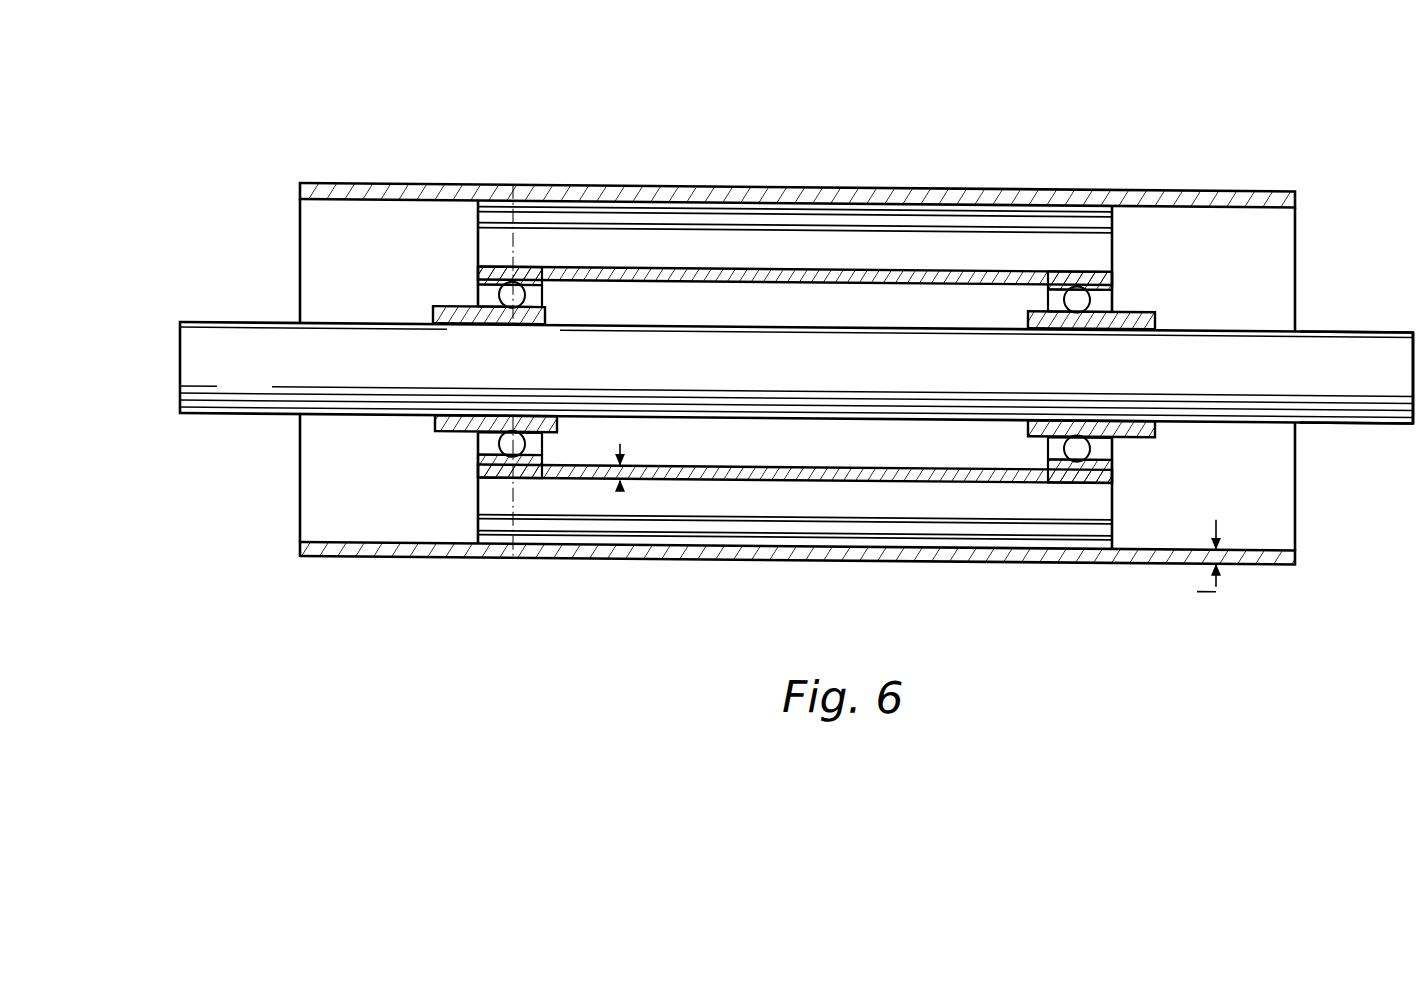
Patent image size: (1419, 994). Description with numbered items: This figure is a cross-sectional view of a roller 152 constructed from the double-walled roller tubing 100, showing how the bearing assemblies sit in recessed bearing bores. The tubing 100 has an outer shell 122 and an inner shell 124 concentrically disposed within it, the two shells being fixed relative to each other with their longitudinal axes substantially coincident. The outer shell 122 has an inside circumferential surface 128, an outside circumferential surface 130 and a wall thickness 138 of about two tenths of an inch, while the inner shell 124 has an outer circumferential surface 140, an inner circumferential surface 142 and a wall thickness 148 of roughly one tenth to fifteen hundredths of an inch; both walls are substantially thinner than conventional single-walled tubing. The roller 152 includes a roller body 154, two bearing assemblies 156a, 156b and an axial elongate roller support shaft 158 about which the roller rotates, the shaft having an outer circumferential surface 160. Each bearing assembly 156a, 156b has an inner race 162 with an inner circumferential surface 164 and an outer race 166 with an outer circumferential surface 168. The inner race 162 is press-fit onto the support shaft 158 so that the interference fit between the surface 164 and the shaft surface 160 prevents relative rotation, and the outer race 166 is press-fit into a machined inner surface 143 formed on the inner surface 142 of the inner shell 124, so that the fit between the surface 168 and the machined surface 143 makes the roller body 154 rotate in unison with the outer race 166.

The roller tubing 100 is at (799, 356).
The outer shell 122 is at (1216, 181).
The inner shell 124 is at (742, 260).
The inside circumferential surface 128 is at (408, 557).
The outside circumferential surface 130 is at (322, 562).
The wall thickness 138 is at (1170, 569).
The outer circumferential surface 140 is at (665, 479).
The inner circumferential surface 142 is at (805, 478).
The machined inner surface 143 is at (520, 260).
The wall thickness 148 is at (582, 479).
The roller 152 is at (772, 336).
The roller body 154 is at (889, 178).
The bearing assembly 156a is at (445, 300).
The bearing assembly 156b is at (1158, 305).
The roller support shaft 158 is at (1370, 348).
The outer circumferential surface 160 is at (799, 337).
The inner race 162 is at (549, 280).
The inner circumferential surface 164 is at (537, 313).
The outer race 166 is at (539, 263).
The outer circumferential surface 168 is at (486, 260).